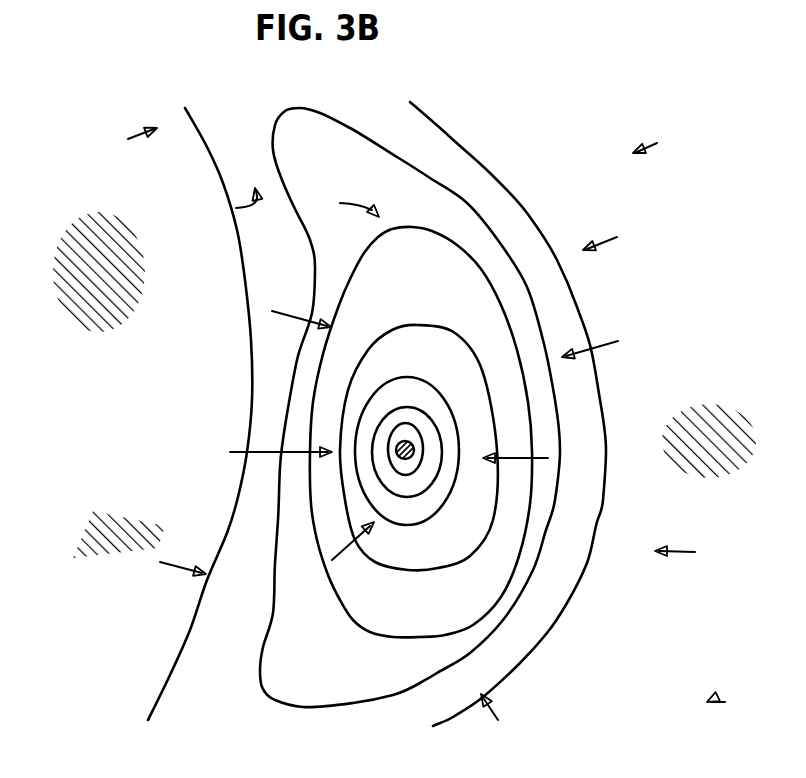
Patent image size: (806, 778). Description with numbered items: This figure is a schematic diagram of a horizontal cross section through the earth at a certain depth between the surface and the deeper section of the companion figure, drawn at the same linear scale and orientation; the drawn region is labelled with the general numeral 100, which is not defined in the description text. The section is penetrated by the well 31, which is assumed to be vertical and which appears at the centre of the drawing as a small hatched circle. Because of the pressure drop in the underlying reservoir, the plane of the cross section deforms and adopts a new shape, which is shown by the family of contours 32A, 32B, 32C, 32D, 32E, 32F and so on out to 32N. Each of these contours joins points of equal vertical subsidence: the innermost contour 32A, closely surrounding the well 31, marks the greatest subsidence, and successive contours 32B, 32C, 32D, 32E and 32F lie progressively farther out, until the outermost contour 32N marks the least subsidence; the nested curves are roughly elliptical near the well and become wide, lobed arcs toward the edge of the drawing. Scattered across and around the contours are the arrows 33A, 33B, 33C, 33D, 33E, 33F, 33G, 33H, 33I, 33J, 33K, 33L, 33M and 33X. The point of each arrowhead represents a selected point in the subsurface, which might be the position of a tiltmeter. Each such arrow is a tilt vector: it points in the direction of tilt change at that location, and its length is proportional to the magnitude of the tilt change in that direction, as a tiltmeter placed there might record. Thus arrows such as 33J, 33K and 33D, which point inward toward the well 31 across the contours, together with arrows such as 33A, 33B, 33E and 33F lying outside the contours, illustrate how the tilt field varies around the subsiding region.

The field pattern / sensing region 100 is at (153, 485).
The well 31 is at (415, 446).
The contour of equal subsidence 32A is at (412, 470).
The contour of equal subsidence 32B is at (409, 497).
The contour of equal subsidence 32C is at (396, 521).
The contour of equal subsidence 32D is at (385, 560).
The contour of equal subsidence 32E is at (358, 622).
The contour of equal subsidence 32F is at (262, 691).
The contour of equal subsidence 32N is at (200, 622).
The tilt vector 33A is at (657, 143).
The tilt vector 33B is at (617, 237).
The tilt vector 33C is at (618, 341).
The tilt vector 33D is at (548, 458).
The tilt vector 33E is at (677, 553).
The tilt vector 33F is at (725, 702).
The tilt vector 33G is at (497, 705).
The tilt vector 33H is at (160, 562).
The tilt vector 33I is at (352, 545).
The tilt vector 33J is at (260, 450).
The tilt vector 33K is at (274, 312).
The tilt vector 33L is at (340, 203).
The tilt vector 33M is at (236, 208).
The tilt vector 33X is at (128, 139).